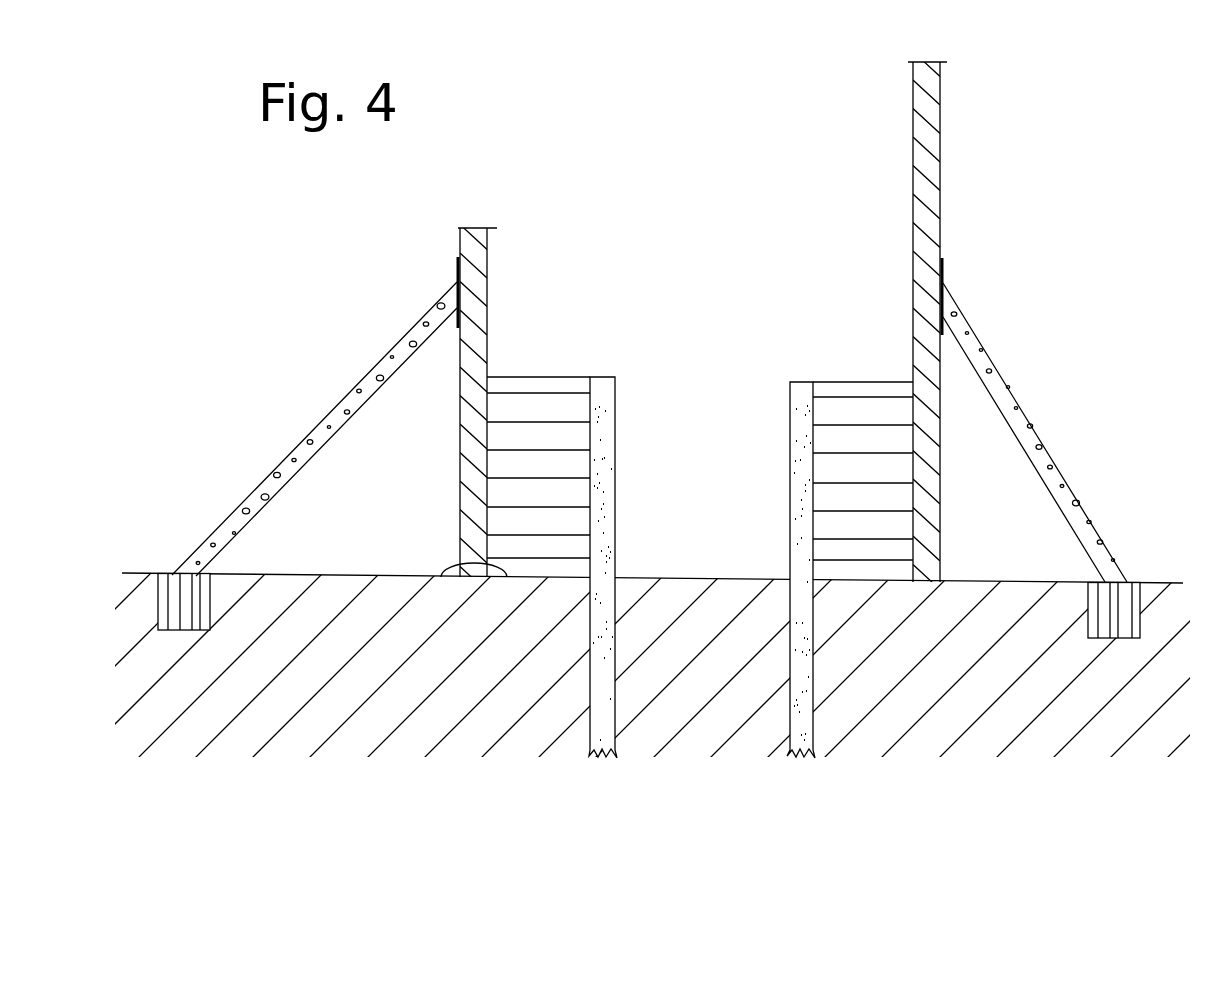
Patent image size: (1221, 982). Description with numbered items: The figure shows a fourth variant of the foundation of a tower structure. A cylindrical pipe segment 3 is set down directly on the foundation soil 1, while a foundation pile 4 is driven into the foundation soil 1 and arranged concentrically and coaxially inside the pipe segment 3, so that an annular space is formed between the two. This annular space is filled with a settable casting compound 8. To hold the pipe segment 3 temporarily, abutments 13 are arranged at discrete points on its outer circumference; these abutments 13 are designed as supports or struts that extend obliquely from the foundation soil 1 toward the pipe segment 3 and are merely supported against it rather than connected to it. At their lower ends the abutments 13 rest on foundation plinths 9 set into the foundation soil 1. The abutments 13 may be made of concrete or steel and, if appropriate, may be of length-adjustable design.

The foundation soil 1 is at (1008, 691).
The pipe segment 3 is at (934, 200).
The foundation pile 4 is at (813, 673).
The settable casting compound 8 is at (862, 420).
The foundation plinth 9 is at (197, 612).
The abutment 13 is at (338, 402).